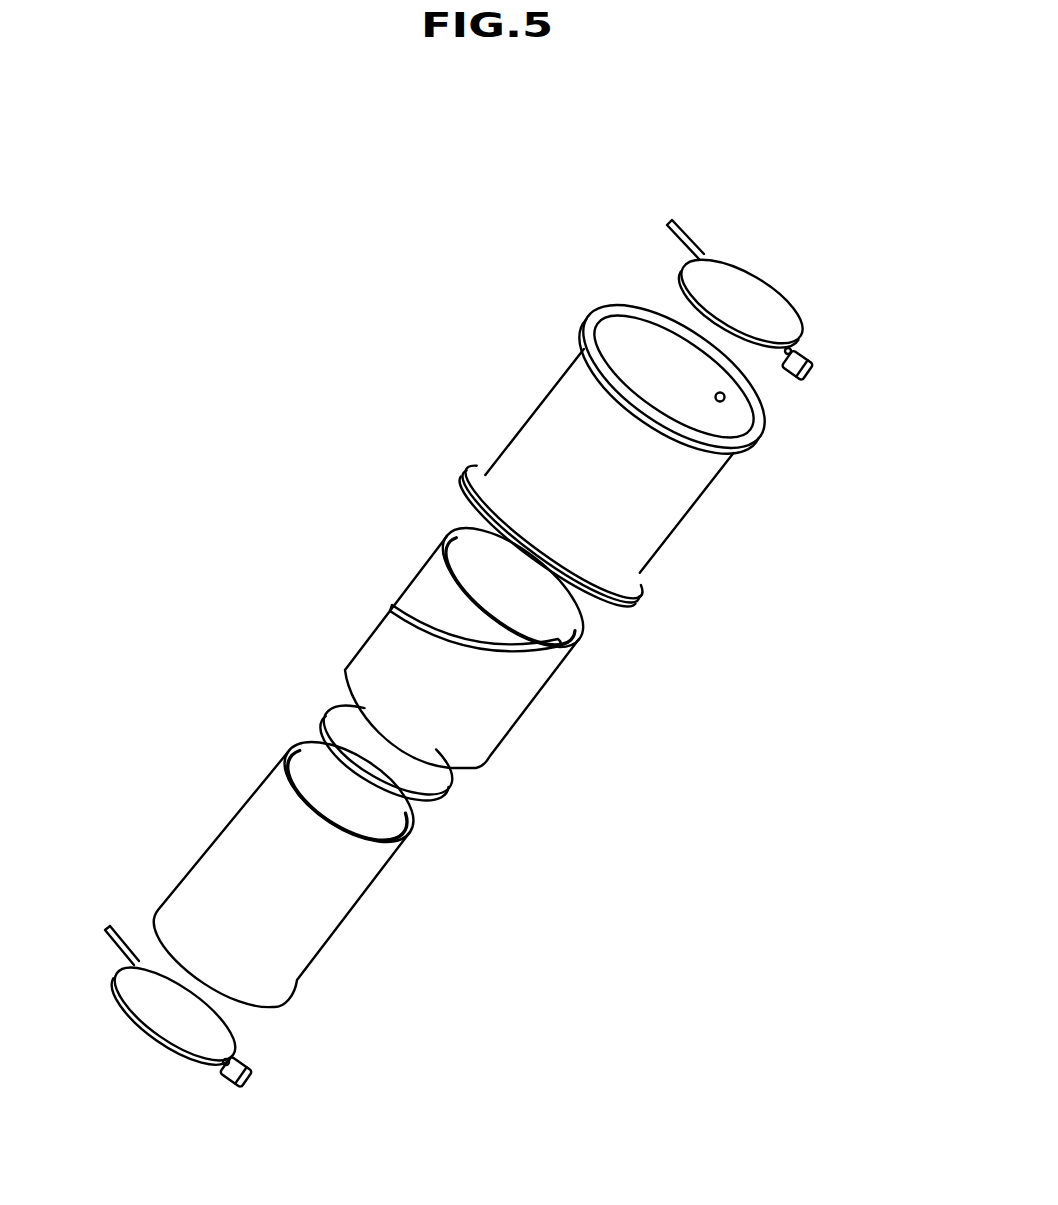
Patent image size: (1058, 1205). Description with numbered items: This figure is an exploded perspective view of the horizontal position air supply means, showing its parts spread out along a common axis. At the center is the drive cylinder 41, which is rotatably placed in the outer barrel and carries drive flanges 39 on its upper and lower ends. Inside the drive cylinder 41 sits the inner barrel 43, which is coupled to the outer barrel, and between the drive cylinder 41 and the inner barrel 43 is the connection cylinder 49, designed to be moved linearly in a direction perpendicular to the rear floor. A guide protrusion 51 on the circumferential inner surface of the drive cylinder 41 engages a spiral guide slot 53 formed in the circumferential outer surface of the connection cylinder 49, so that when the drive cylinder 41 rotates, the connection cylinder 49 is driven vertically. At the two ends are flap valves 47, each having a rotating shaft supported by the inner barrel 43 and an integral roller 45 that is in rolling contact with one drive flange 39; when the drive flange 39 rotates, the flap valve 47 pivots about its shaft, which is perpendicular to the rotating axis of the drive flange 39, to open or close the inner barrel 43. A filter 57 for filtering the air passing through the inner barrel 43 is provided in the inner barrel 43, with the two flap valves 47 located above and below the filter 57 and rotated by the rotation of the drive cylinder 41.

The drive flange 39 is at (767, 430).
The drive cylinder 41 is at (675, 507).
The inner barrel 43 is at (207, 863).
The roller 45 is at (807, 352).
The flap valve 47 is at (757, 298).
The connection cylinder 49 is at (492, 719).
The guide protrusion 51 is at (727, 397).
The spiral guide slot 53 is at (493, 652).
The filter 57 is at (440, 797).